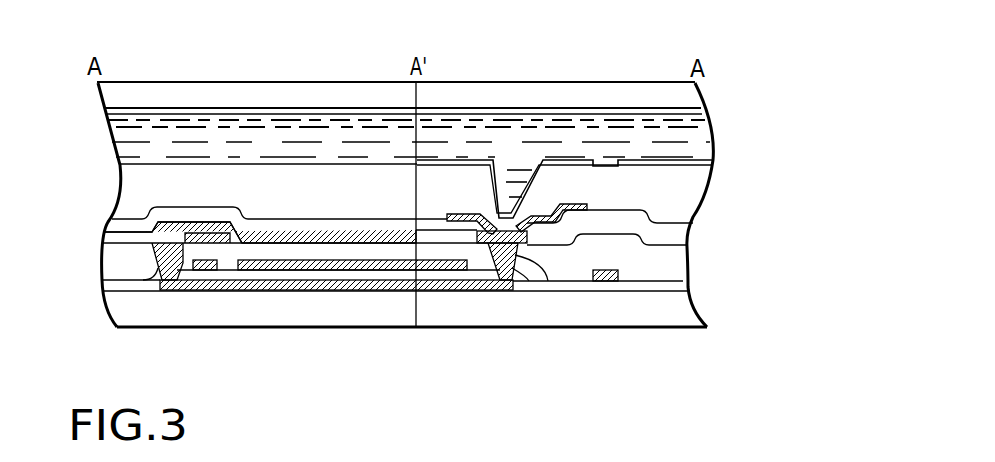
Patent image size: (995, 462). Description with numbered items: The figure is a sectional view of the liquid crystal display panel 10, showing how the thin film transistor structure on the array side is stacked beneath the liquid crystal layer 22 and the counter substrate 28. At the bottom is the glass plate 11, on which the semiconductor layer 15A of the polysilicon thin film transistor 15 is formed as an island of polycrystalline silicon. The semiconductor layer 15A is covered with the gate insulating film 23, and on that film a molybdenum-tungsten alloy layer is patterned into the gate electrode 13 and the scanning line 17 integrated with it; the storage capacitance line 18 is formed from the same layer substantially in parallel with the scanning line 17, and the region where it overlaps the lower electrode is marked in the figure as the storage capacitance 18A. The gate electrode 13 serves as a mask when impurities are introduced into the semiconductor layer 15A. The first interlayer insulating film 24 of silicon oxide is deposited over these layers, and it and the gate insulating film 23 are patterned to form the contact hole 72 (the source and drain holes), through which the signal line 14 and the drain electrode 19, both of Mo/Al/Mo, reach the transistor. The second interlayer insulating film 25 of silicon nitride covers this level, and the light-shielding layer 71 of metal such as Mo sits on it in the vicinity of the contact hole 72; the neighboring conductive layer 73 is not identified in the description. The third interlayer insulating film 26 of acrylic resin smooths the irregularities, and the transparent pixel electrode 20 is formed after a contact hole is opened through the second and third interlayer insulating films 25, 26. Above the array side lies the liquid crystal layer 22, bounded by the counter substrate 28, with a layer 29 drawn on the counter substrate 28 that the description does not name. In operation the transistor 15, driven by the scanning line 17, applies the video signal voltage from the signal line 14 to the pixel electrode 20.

The liquid crystal display panel 10 is at (182, 70).
The glass plate 11 is at (690, 310).
The gate electrode 13 is at (210, 270).
The signal line 14 is at (103, 240).
The polysilicon thin film transistor 15 is at (187, 297).
The semiconductor layer 15A is at (272, 291).
The scanning line 17 is at (603, 282).
The storage capacitance line 18 is at (343, 270).
The storage capacitance 18A is at (472, 358).
The drain electrode 19 is at (502, 282).
The pixel electrode 20 is at (713, 162).
The liquid crystal layer 22 is at (271, 128).
The gate insulating film 23 is at (668, 292).
The first interlayer insulating film 24 is at (677, 267).
The second interlayer insulating film 25 is at (678, 237).
The third interlayer insulating film 26 is at (698, 182).
The counter substrate 28 is at (640, 93).
The color filter 29 is at (352, 110).
The light-shielding layer 71 is at (462, 205).
The contact hole 72 is at (550, 283).
The source electrode 73 is at (547, 188).